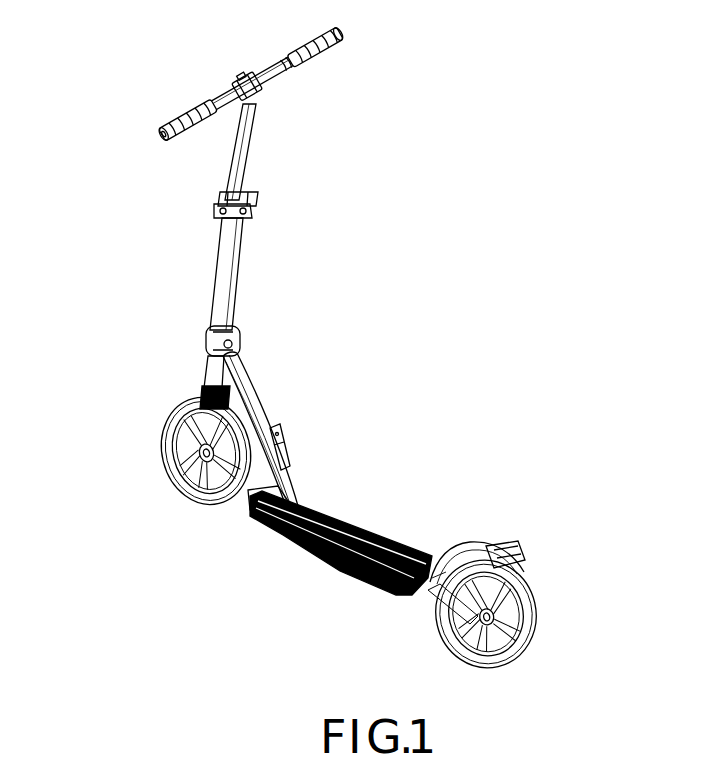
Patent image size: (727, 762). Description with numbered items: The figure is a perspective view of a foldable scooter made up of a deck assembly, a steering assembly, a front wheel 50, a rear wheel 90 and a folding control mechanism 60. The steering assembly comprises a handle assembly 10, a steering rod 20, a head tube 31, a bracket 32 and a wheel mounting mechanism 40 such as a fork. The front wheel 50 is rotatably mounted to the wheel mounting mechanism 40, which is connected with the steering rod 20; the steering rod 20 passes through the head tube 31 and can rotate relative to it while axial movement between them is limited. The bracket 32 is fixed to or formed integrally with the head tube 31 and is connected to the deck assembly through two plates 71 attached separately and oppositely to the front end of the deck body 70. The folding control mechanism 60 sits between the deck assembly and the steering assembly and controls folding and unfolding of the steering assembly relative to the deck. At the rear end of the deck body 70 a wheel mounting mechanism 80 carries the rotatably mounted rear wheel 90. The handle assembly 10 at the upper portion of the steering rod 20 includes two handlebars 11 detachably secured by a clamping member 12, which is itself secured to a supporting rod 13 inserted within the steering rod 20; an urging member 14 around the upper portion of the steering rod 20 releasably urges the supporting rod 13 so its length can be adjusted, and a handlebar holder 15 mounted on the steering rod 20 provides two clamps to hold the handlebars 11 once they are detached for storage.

The handle assembly 10 is at (197, 109).
The handlebars 11 is at (297, 45).
The clamping member 12 is at (233, 90).
The supporting rod 13 is at (233, 167).
The urging member 14 is at (230, 200).
The handlebar holder 15 is at (222, 212).
The steering rod 20 is at (218, 280).
The head tube 31 is at (210, 358).
The bracket 32 is at (267, 397).
The wheel mounting mechanism 40 is at (168, 420).
The front wheel 50 is at (170, 460).
The folding control mechanism 60 is at (290, 447).
The deck body 70 is at (385, 545).
The plates 71 is at (268, 520).
The wheel mounting mechanism 80 is at (443, 617).
The rear wheel 90 is at (530, 611).